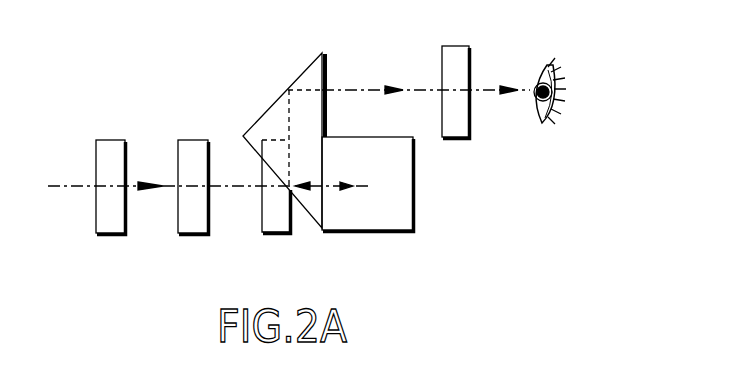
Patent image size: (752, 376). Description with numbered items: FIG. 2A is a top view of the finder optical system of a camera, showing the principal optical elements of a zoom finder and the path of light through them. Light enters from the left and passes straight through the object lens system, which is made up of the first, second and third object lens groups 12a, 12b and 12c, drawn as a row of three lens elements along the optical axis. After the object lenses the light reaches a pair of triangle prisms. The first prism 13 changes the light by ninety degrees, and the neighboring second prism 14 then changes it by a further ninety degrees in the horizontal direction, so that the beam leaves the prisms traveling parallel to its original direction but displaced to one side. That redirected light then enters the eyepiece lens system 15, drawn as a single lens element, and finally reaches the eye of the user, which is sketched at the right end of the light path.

The first object lens group 12a is at (108, 147).
The second object lens group 12b is at (193, 147).
The third object lens group 12c is at (277, 227).
The first prism 13 is at (388, 220).
The second prism 14 is at (305, 98).
The eyepiece lens system 15 is at (453, 52).